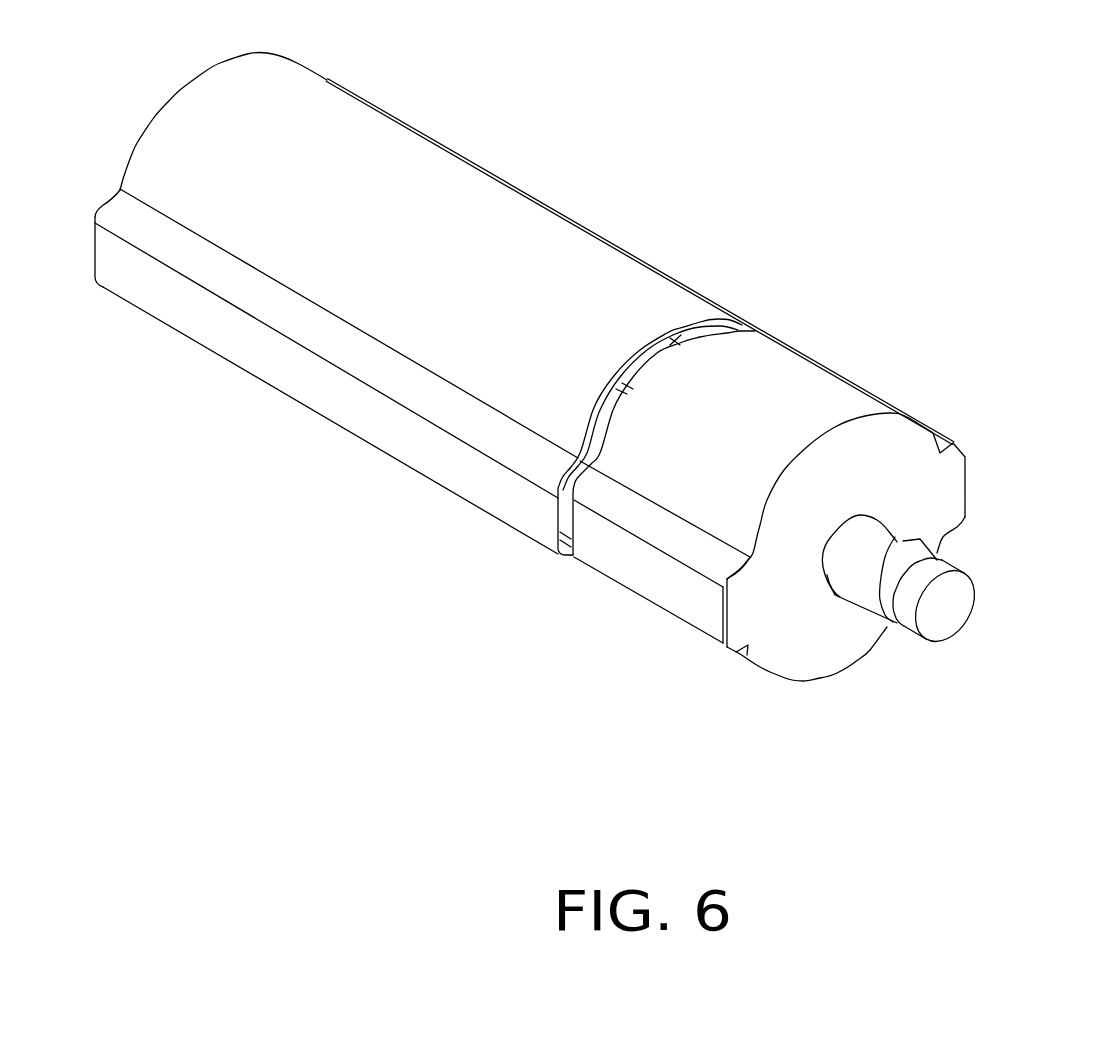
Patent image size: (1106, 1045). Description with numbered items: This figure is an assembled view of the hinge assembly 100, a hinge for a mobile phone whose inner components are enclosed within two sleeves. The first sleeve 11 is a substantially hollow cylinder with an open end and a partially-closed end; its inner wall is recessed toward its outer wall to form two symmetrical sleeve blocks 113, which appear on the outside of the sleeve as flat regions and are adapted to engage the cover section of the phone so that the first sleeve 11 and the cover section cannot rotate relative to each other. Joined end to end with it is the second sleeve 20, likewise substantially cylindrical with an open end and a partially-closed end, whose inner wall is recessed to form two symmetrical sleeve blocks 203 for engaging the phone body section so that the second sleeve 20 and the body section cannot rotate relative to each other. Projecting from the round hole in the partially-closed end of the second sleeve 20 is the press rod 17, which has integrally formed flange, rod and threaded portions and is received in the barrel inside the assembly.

The hinge assembly 100 is at (652, 52).
The first sleeve 11 is at (203, 138).
The sleeve blocks 113 is at (302, 375).
The second sleeve 20 is at (803, 407).
The sleeve blocks 203 is at (632, 570).
The press rod 17 is at (957, 610).